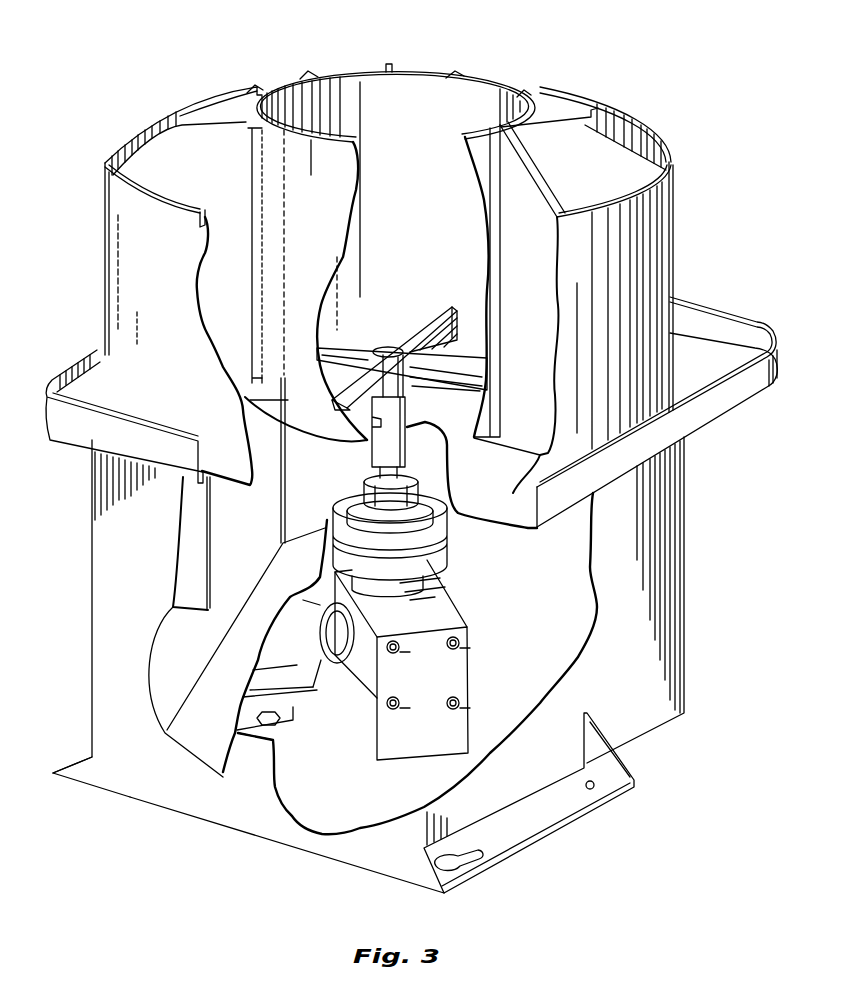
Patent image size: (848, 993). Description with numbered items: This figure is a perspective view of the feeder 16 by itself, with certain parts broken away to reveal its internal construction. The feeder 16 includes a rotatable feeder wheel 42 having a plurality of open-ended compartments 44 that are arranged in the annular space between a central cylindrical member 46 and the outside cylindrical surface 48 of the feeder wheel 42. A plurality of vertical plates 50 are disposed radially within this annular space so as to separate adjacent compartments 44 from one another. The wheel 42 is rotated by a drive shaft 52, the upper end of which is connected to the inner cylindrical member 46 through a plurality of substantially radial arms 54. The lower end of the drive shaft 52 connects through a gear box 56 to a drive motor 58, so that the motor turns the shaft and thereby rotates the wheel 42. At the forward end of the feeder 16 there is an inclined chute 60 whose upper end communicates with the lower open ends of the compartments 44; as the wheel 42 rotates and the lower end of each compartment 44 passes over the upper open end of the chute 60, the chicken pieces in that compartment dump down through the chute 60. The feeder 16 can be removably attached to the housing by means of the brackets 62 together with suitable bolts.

The feeder 16 is at (107, 247).
The feeder wheel 42 is at (126, 211).
The open-ended compartments 44 is at (156, 143).
The central cylindrical member 46 is at (412, 98).
The outside cylindrical surface 48 is at (662, 241).
The vertical plates 50 is at (188, 187).
The drive shaft 52 is at (407, 443).
The radial arms 54 is at (428, 324).
The gear box 56 is at (415, 745).
The drive motor 58 is at (301, 672).
The inclined chute 60 is at (205, 730).
The brackets 62 is at (80, 775).